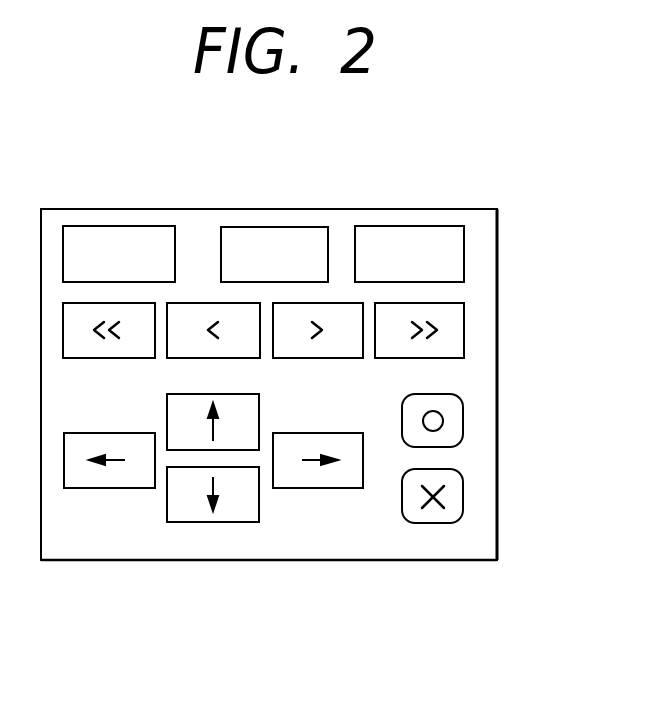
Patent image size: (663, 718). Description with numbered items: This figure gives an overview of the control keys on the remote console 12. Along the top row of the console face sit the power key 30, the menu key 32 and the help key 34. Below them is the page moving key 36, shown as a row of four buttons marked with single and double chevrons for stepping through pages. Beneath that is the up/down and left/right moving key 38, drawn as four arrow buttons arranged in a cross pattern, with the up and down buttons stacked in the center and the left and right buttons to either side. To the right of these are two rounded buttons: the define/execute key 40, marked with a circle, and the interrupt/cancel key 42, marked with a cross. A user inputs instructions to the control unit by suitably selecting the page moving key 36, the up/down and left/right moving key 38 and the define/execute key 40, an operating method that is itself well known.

The remote console 12 is at (498, 225).
The power key 30 is at (123, 226).
The menu key 32 is at (276, 227).
The help key 34 is at (412, 226).
The page moving key 36 is at (472, 328).
The up/down and left/right moving key 38 is at (232, 541).
The define/execute key 40 is at (463, 417).
The interrupt/cancel key 42 is at (463, 496).